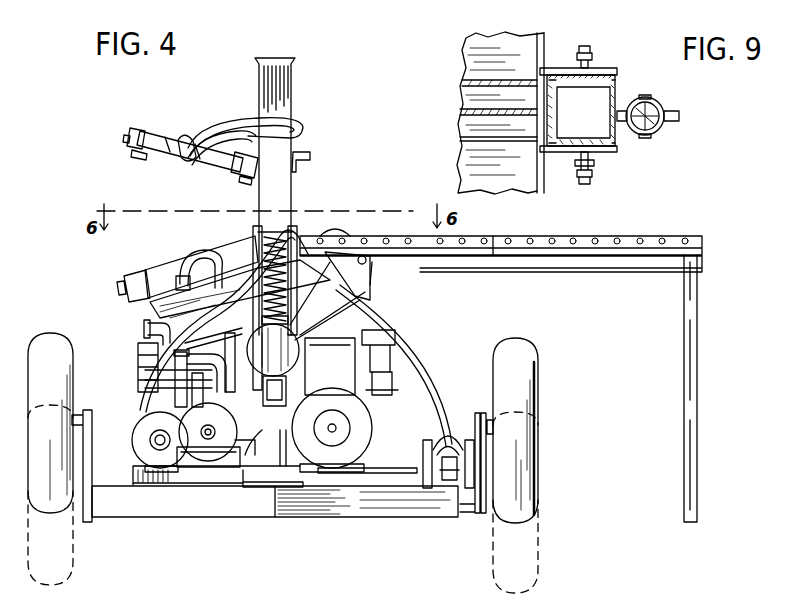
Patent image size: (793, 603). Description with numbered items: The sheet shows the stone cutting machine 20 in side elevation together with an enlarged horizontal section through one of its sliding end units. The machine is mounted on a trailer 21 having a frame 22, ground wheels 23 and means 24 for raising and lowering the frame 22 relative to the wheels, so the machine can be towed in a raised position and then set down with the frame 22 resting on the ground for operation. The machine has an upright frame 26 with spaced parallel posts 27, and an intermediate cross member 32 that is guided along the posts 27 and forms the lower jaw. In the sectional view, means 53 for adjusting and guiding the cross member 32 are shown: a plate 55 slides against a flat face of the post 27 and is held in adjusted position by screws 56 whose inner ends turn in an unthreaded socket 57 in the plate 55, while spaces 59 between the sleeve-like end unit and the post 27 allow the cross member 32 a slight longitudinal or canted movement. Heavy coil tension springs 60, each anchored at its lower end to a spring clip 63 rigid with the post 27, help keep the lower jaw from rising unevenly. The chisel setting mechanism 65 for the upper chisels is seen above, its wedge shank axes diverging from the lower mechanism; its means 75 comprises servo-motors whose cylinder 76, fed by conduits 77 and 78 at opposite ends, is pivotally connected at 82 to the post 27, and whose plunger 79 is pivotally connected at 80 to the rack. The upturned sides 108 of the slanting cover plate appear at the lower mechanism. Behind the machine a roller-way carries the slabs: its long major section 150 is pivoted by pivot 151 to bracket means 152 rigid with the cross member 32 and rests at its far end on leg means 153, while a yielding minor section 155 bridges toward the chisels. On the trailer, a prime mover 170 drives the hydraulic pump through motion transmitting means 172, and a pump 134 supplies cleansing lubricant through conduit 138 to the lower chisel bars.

In FIG. 4, the stone cutting machine 20 is at (292, 63).
In FIG. 4, the trailer 21 is at (88, 516).
In FIG. 4, the frame 22 is at (424, 508).
In FIG. 4, the ground wheels 23 is at (48, 334).
In FIG. 4, the means for raising and lowering the frame 24 is at (455, 425).
In FIG. 4, the upright frame 26 is at (252, 76).
In FIG. 4, the posts 27 is at (288, 90).
In FIG. 9, the posts 27 is at (569, 112).
In FIG. 9, the intermediate cross member 32 is at (476, 116).
In FIG. 9, the means for adjusting and guiding the cross member 53 is at (618, 72).
In FIG. 9, the plate 55 is at (620, 83).
In FIG. 9, the screws 56 is at (577, 50).
In FIG. 9, the unthreaded socket 57 is at (595, 160).
In FIG. 9, the spaces 59 is at (545, 97).
In FIG. 4, the coil tension springs 60 is at (298, 308).
In FIG. 9, the coil tension springs 60 is at (664, 124).
In FIG. 9, the spring clip 63 is at (680, 113).
In FIG. 4, the mechanism 65 is at (140, 135).
In FIG. 4, the means for reciprocating the rack 75 is at (208, 164).
In FIG. 4, the cylinder 76 is at (220, 145).
In FIG. 4, the conduit 77 is at (253, 126).
In FIG. 4, the conduit 78 is at (305, 133).
In FIG. 4, the plunger 79 is at (166, 145).
In FIG. 4, the pivotal connection 80 is at (140, 152).
In FIG. 4, the pivotal connection 82 is at (255, 165).
In FIG. 4, the upturned sides of cover plate 108 is at (160, 264).
In FIG. 4, the pump 134 is at (146, 420).
In FIG. 4, the conduit 138 is at (148, 392).
In FIG. 4, the major section of roller-way 150 is at (558, 262).
In FIG. 4, the pivot 151 is at (372, 262).
In FIG. 4, the bracket means 152 is at (368, 288).
In FIG. 4, the leg means 153 is at (697, 432).
In FIG. 4, the minor section of roller-way 155 is at (345, 236).
In FIG. 4, the prime mover 170 is at (363, 428).
In FIG. 4, the motion transmitting means 172 is at (246, 455).